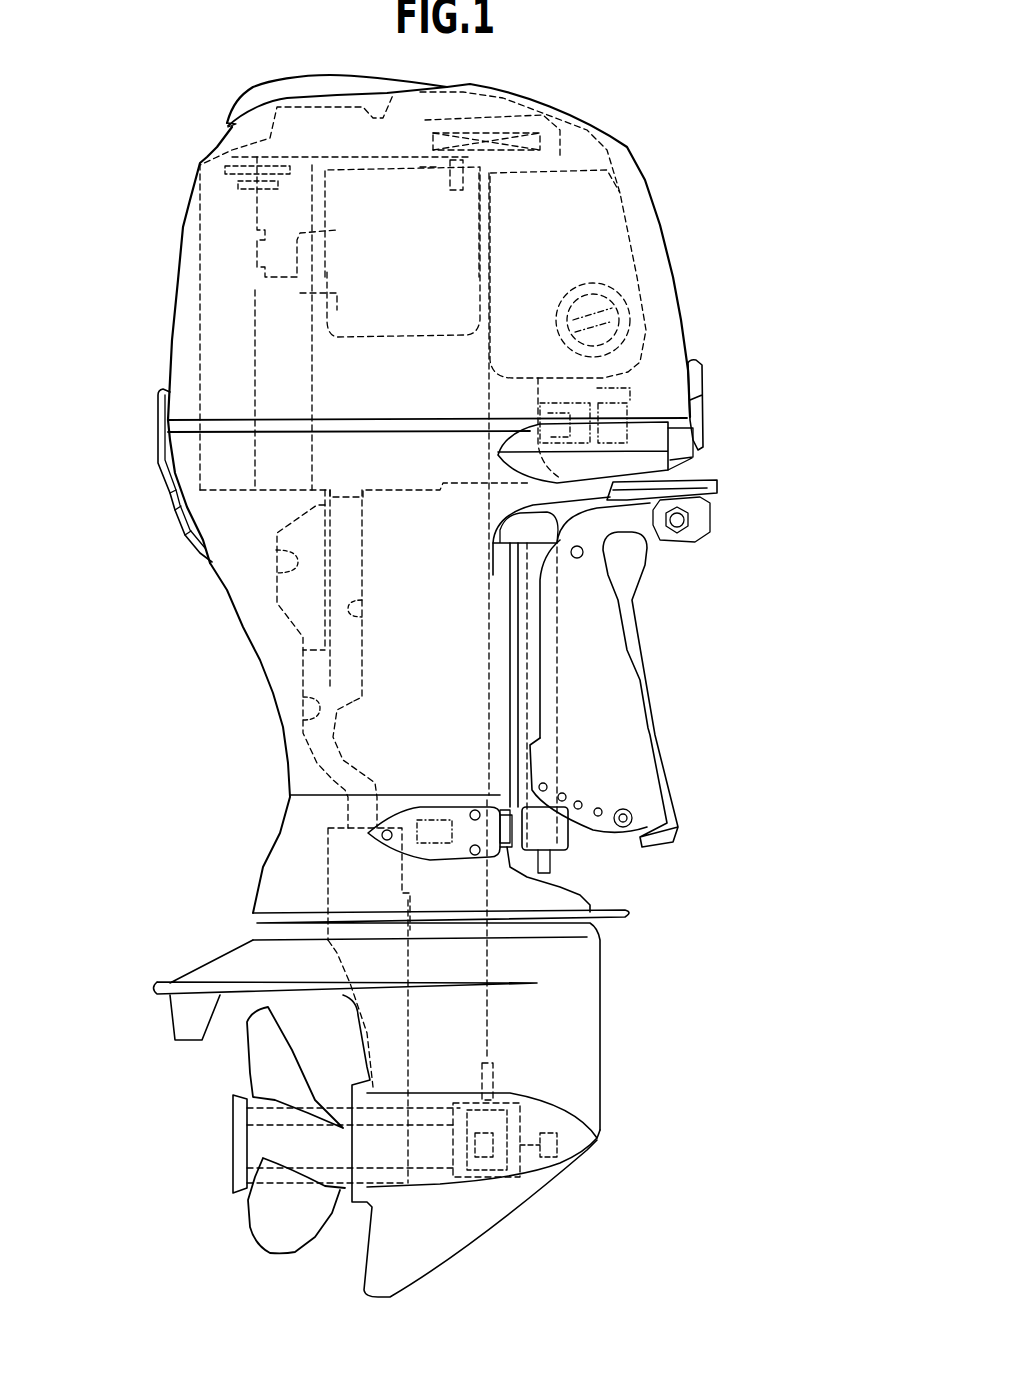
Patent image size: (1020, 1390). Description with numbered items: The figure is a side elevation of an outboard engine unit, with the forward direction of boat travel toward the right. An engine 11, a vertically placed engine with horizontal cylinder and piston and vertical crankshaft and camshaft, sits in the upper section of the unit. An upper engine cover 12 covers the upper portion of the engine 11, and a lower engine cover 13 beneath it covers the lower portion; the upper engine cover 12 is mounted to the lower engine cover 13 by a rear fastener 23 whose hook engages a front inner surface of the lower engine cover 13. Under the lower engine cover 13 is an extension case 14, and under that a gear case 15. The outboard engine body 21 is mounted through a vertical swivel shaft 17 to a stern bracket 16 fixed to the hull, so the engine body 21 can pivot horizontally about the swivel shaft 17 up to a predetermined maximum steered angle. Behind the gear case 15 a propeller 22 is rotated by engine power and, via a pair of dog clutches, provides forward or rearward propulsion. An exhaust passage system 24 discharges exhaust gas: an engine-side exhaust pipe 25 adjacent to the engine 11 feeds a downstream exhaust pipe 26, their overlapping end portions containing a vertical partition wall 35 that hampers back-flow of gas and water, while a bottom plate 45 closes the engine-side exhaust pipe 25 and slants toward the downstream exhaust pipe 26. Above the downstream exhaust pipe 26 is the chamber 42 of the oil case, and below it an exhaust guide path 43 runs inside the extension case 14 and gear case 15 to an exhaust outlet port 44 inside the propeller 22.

The engine 11 is at (200, 297).
The upper engine cover 12 is at (168, 333).
The lower engine cover 13 is at (223, 588).
The extension case 14 is at (287, 833).
The gear case 15 is at (600, 1053).
The stern bracket 16 is at (650, 672).
The swivel shaft 17 is at (557, 735).
The outboard engine body 21 is at (702, 340).
The propeller 22 is at (260, 1220).
The rear fastener 23 is at (156, 412).
The exhaust passage system 24 is at (270, 660).
The engine-side exhaust pipe 25 is at (362, 617).
The downstream exhaust pipe 26 is at (317, 712).
The vertical partition wall 35 is at (332, 672).
The chamber 42 is at (285, 554).
The exhaust guide path 43 is at (375, 1067).
The exhaust outlet port 44 is at (250, 1110).
The bottom plate 45 is at (352, 702).